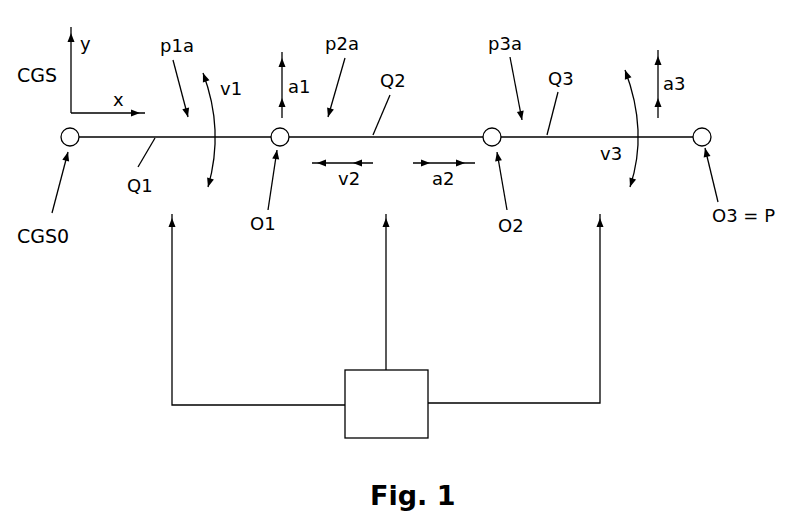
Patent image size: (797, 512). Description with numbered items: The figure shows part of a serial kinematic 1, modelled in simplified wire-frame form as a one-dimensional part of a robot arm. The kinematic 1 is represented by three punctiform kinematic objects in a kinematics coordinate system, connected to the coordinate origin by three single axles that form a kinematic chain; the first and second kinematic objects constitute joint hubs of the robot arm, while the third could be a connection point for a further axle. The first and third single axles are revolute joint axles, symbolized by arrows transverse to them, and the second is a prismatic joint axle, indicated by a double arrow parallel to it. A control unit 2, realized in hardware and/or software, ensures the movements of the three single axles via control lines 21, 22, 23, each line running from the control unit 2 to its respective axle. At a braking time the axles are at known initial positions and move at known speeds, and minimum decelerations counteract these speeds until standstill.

The kinematic 1 is at (310, 257).
The control unit 2 is at (395, 415).
The control line 21 is at (172, 308).
The control line 22 is at (388, 302).
The control line 23 is at (602, 305).